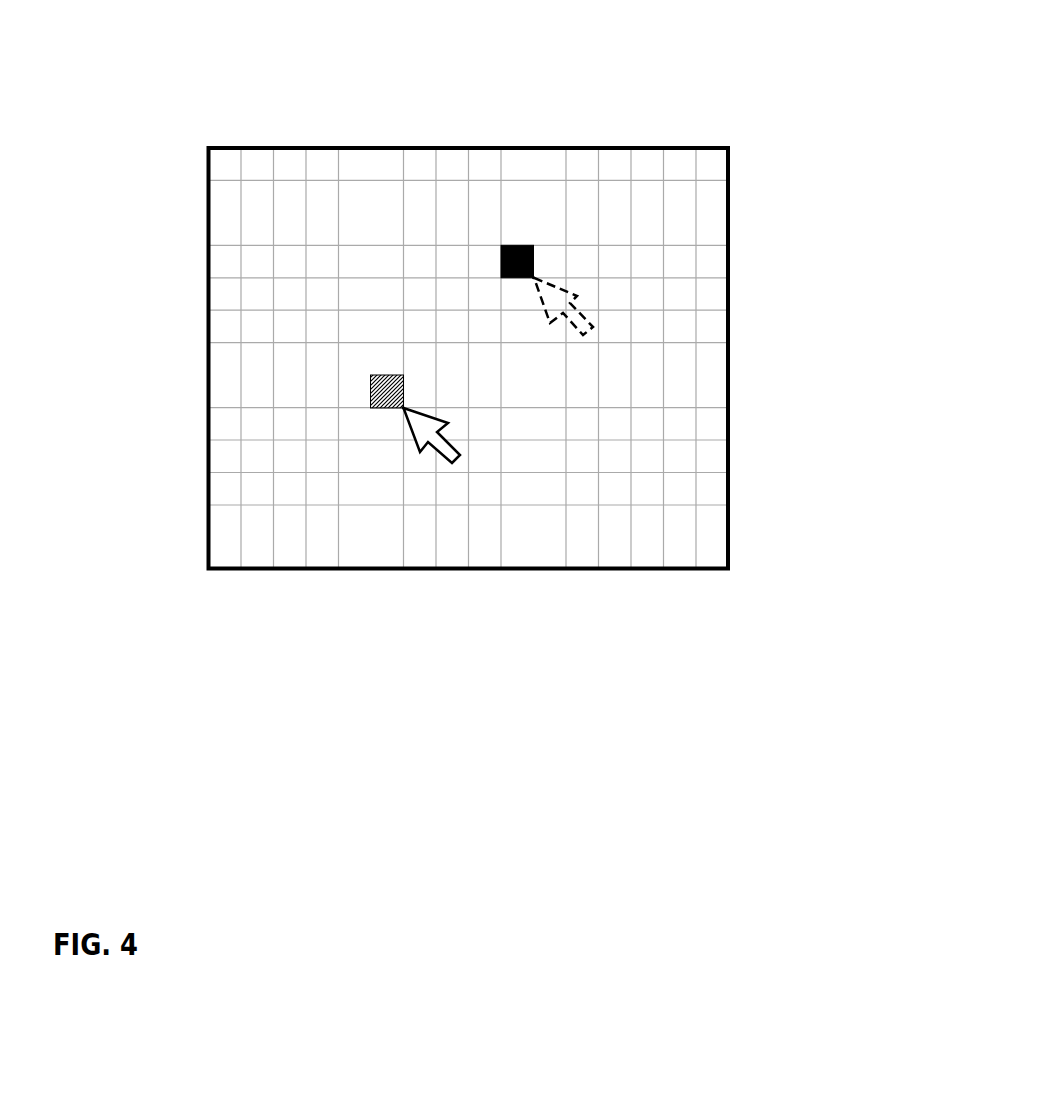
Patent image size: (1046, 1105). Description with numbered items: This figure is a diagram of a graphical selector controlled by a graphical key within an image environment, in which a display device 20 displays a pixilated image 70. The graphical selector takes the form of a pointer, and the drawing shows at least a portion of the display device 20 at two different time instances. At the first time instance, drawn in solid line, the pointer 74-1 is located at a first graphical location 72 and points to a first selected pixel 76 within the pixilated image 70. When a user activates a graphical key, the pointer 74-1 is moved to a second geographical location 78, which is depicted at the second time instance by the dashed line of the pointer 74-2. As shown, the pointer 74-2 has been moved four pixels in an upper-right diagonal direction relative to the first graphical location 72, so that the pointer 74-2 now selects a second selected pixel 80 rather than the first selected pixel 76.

The display device 20 is at (295, 147).
The pixilated image 70 is at (207, 228).
The first graphical location 72 is at (397, 423).
The pointer 74-1 is at (468, 475).
The pointer 74-2 is at (600, 345).
The first selected pixel 76 is at (355, 390).
The second geographical location 78 is at (550, 262).
The second selected pixel 80 is at (517, 240).